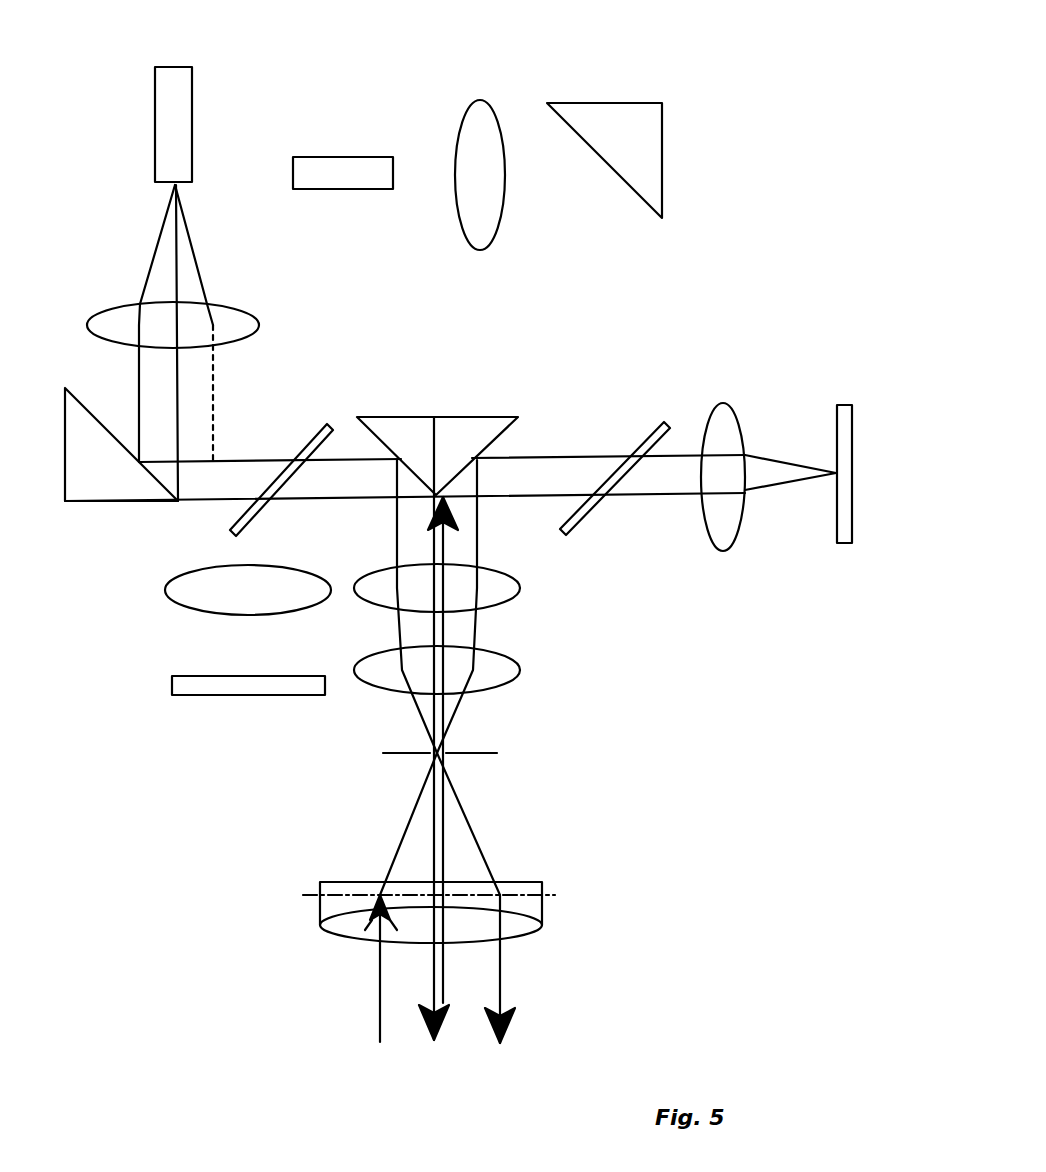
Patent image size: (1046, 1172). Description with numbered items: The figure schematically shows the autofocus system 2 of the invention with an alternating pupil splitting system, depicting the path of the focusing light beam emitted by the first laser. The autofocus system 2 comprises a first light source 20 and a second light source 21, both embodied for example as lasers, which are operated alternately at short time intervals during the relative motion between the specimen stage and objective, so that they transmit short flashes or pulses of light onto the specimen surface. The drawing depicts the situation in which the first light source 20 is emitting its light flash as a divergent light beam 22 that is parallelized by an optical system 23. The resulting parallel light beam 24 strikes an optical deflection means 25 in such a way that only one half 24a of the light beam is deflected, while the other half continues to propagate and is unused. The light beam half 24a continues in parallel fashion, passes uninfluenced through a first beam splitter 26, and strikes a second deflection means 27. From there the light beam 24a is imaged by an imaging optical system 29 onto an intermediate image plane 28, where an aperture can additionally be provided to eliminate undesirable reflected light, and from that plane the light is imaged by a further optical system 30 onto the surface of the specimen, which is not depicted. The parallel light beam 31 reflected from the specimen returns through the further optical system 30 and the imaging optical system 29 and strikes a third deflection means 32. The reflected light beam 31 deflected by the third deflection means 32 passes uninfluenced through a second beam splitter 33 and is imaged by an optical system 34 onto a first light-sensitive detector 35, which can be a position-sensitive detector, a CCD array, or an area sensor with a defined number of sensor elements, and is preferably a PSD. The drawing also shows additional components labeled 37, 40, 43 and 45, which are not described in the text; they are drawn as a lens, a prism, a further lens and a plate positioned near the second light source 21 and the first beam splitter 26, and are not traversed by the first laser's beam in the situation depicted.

The autofocus system 2 is at (590, 554).
The first light source 20 is at (173, 70).
The second light source 21 is at (330, 162).
The divergent light beam 22 is at (173, 250).
The optical system 23 is at (240, 316).
The parallel light beam 24 is at (153, 390).
The light beam half 24a is at (242, 490).
The optical deflection means 25 is at (77, 477).
The first beam splitter 26 is at (313, 445).
The second deflection means 27 is at (393, 425).
The intermediate image plane 28 is at (485, 750).
The imaging optical system 29 is at (497, 597).
The further optical system 30 is at (352, 887).
The reflected parallel light beam 31 is at (547, 462).
The third deflection means 32 is at (455, 425).
The second beam splitter 33 is at (642, 448).
The optical system 34 is at (720, 413).
The first light-sensitive detector 35 is at (845, 440).
The lens 37 is at (470, 118).
The prism 40 is at (632, 114).
The lens 43 is at (172, 588).
The filter plate 45 is at (180, 685).